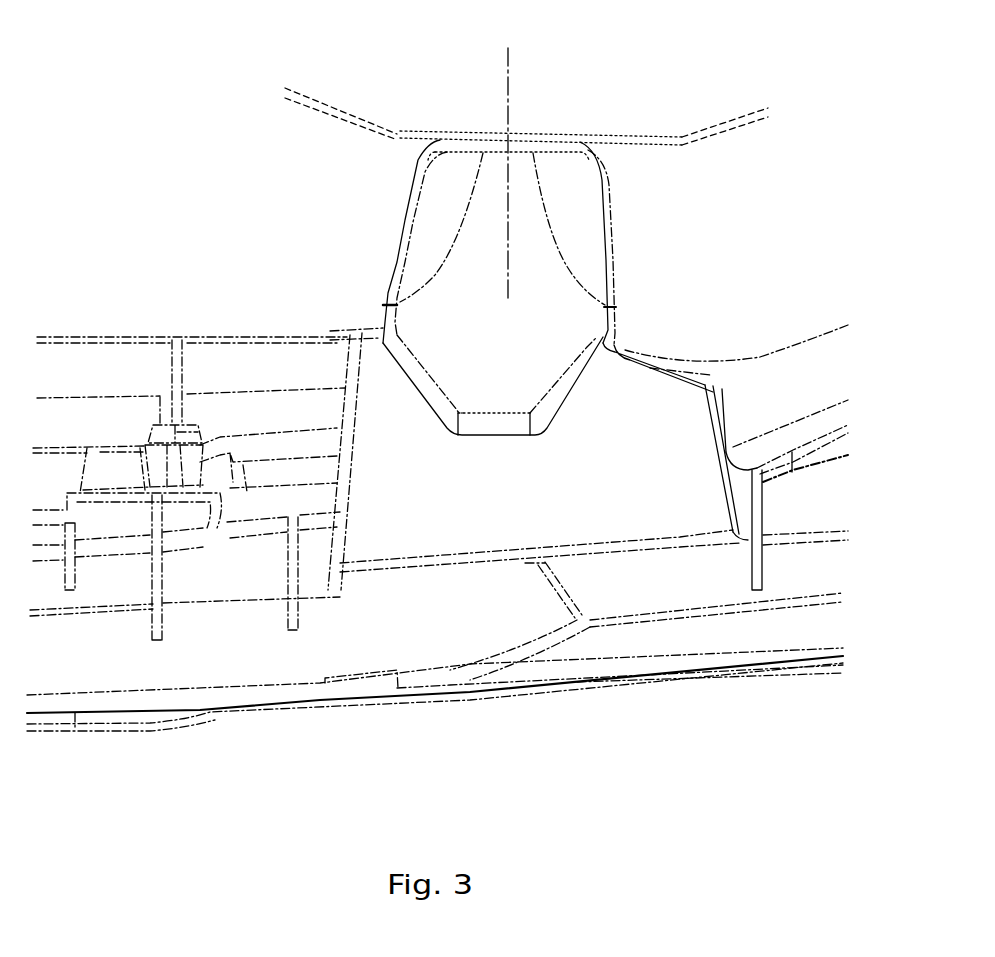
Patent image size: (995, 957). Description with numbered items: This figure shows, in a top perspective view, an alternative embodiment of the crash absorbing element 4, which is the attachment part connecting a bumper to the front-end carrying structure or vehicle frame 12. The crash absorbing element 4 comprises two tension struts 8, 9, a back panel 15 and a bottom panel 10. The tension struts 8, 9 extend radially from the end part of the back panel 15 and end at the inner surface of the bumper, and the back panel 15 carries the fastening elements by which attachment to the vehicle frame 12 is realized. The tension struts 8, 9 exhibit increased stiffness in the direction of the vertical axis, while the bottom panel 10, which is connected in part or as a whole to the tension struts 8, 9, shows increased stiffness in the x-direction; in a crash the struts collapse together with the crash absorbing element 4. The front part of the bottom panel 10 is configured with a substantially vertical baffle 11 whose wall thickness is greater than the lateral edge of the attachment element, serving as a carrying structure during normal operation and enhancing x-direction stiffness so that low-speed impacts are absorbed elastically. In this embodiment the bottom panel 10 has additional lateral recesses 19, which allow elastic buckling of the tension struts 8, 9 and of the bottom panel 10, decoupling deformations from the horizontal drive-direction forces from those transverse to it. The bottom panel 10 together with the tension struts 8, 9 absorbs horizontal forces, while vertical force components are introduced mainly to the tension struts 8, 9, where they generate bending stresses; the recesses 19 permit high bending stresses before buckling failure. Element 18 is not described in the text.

The crash absorbing element 4 is at (392, 255).
The tension strut 8 is at (386, 293).
The tension strut 9 is at (613, 294).
The bottom panel 10 is at (522, 360).
The baffle 11 is at (572, 378).
The vehicle frame 12 is at (398, 130).
The back panel 15 is at (573, 146).
The upper frame edge 18 is at (543, 147).
The lateral recesses 19 is at (440, 200).